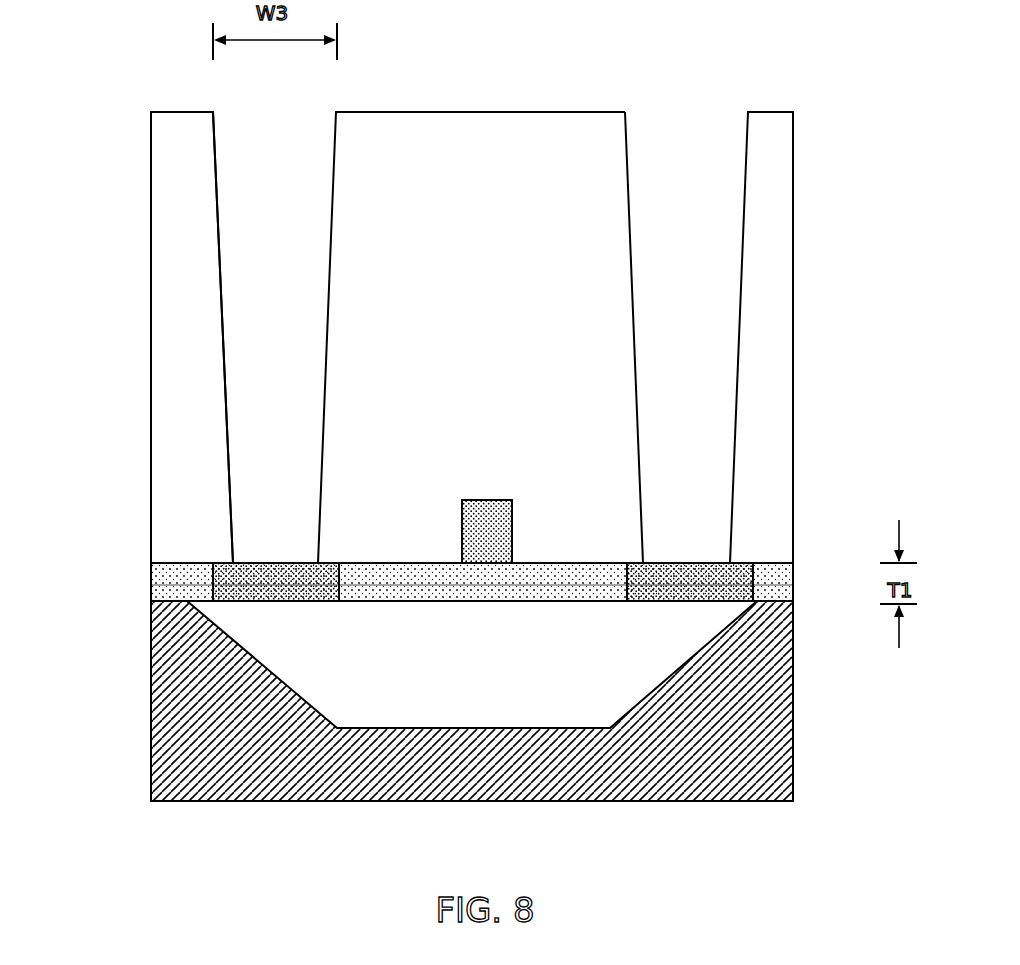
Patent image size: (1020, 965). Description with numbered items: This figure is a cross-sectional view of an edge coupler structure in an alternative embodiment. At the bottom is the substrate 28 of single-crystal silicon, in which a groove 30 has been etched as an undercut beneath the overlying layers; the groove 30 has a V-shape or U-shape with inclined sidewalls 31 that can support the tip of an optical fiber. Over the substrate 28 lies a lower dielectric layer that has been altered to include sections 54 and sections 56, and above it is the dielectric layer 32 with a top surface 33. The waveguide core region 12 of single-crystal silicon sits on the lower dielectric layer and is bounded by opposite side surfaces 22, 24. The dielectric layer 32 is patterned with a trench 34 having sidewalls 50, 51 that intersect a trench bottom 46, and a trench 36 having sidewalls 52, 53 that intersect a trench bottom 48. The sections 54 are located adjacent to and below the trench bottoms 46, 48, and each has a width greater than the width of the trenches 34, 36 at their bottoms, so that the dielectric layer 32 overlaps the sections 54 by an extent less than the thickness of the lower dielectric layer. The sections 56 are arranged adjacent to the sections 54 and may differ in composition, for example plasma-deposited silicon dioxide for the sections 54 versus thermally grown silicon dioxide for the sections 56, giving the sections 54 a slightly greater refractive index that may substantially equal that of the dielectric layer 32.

The waveguide core region 12 is at (490, 513).
The side surface 22 is at (462, 545).
The side surface 24 is at (512, 546).
The substrate 28 is at (180, 718).
The groove 30 is at (497, 663).
The sidewalls 31 is at (257, 665).
The dielectric layer 32 is at (176, 321).
The top surface 33 is at (180, 112).
The trench 34 is at (285, 318).
The trench 36 is at (692, 315).
The trench bottom 46 is at (263, 563).
The trench bottom 48 is at (680, 563).
The sidewall 50 is at (225, 405).
The sidewall 51 is at (326, 380).
The sidewall 52 is at (633, 333).
The sidewall 53 is at (740, 342).
The sections 54 is at (233, 582).
The sections 56 is at (375, 585).